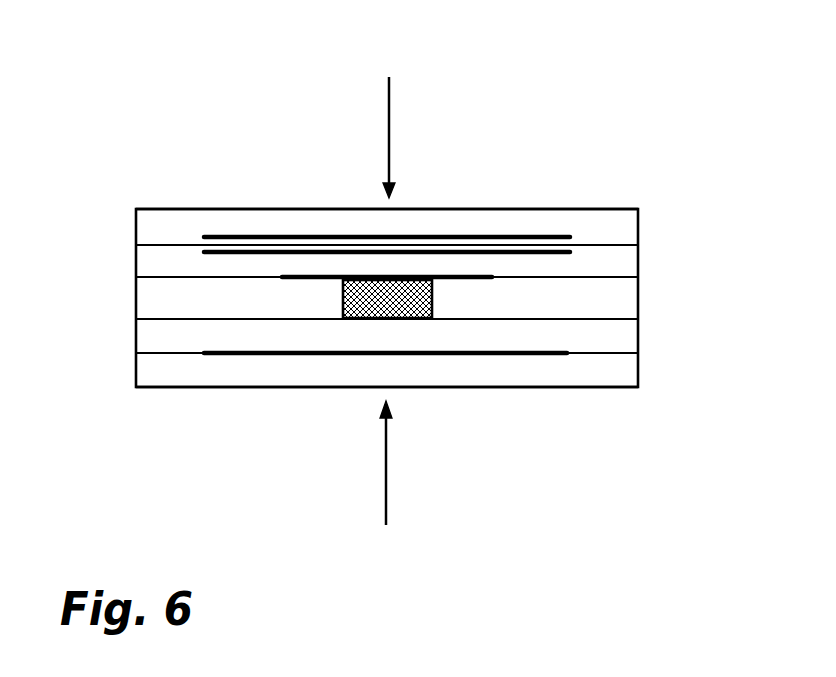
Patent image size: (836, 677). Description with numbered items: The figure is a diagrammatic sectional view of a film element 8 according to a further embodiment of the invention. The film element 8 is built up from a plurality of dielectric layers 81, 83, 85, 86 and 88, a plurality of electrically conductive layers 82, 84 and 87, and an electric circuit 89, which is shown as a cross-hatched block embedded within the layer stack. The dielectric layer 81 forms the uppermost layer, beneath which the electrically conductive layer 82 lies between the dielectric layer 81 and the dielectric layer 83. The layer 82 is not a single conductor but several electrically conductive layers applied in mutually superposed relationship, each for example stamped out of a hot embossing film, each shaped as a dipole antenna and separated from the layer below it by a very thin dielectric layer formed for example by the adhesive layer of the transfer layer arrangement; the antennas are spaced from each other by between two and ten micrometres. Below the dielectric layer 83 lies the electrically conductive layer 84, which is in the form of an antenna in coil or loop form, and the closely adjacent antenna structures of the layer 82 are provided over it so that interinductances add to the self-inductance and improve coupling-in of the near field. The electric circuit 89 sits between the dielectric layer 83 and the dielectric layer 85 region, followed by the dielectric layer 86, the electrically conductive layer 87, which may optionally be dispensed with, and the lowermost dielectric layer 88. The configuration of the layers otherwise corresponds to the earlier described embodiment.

The laminated stack assembly 8 is at (523, 92).
The dielectric layer 81 is at (427, 222).
The electrically conductive layer 82 is at (572, 237).
The dielectric layer 83 is at (150, 263).
The electrically conductive layer 84 is at (478, 277).
The dielectric layer 85 is at (617, 306).
The dielectric layer 86 is at (150, 328).
The electrically conductive layer 87 is at (552, 353).
The dielectric layer 88 is at (310, 375).
The electric circuit 89 is at (393, 302).